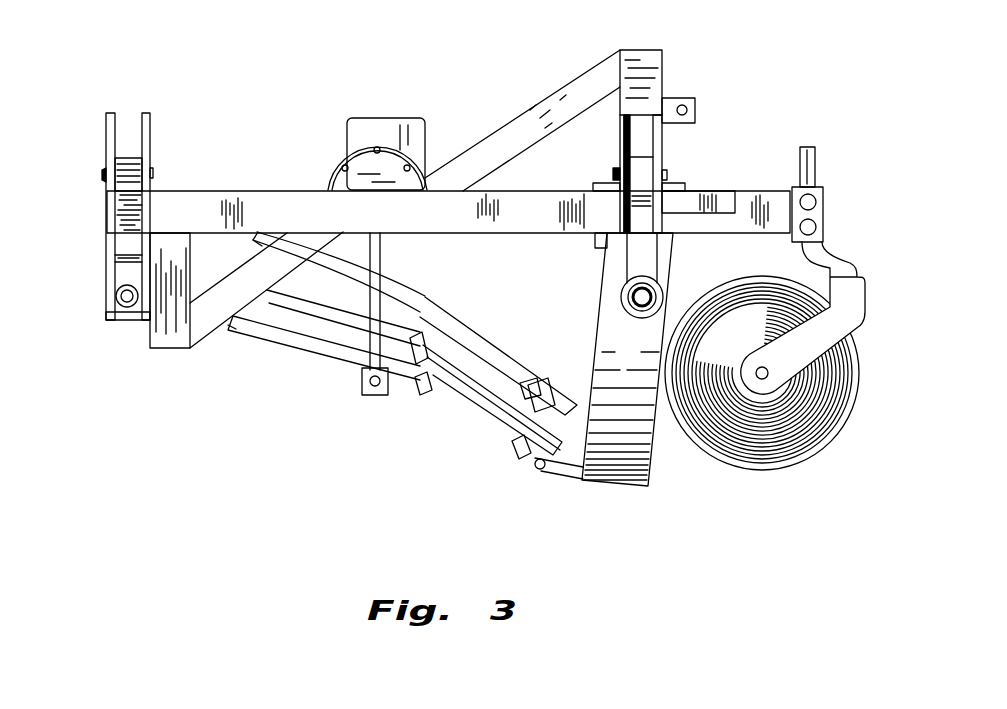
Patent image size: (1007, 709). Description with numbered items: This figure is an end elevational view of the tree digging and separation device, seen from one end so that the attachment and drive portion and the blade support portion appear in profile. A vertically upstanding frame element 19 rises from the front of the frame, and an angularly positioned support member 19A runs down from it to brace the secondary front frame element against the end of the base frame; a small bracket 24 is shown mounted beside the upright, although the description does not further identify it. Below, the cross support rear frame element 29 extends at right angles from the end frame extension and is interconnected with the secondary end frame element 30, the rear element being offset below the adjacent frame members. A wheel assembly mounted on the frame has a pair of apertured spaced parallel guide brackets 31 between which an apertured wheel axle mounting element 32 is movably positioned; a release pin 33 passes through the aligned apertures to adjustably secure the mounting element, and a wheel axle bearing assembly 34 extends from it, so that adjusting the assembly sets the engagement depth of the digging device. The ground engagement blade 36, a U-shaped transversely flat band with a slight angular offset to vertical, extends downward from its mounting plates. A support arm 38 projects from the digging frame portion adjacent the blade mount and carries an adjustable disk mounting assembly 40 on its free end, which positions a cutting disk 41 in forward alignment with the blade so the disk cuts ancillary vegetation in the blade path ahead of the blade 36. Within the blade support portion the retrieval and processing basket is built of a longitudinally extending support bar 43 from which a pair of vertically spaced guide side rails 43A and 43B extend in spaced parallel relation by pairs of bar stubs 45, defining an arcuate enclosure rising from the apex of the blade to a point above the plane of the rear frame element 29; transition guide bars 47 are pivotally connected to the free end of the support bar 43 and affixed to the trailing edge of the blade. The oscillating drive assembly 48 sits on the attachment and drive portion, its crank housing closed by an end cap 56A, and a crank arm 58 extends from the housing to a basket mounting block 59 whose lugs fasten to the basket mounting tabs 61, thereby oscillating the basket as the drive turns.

The vertically upstanding frame element 19 is at (661, 75).
The angularly positioned support member 19A is at (580, 95).
The mounting bracket 24 is at (687, 105).
The cross support rear frame element 29 is at (148, 340).
The secondary end frame element 30 is at (277, 212).
The guide brackets 31 is at (108, 113).
The wheel axle mounting element 32 is at (133, 253).
The release pin 33 is at (102, 175).
The wheel axle bearing assembly 34 is at (121, 296).
The ground engagement blade 36 is at (627, 447).
The support arm 38 is at (772, 188).
The adjustable disk mounting assembly 40 is at (825, 203).
The cutting disk 41 is at (815, 410).
The support bar 43 is at (232, 328).
The guide side rail 43A is at (470, 337).
The guide side rail 43B is at (440, 440).
The bar stubs 45 is at (527, 377).
The transition guide bars 47 is at (445, 330).
The oscillating drive assembly 48 is at (328, 128).
The end cap 56A is at (390, 165).
The crank arm 58 is at (380, 250).
The basket mounting block 59 is at (358, 385).
The basket mounting tabs 61 is at (256, 335).